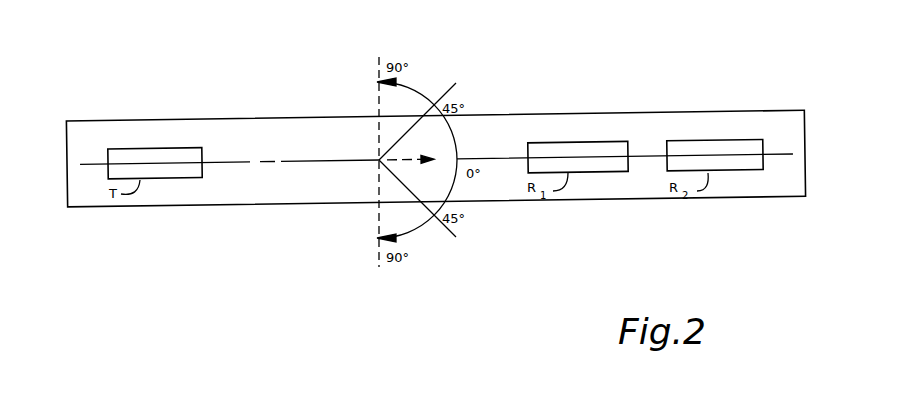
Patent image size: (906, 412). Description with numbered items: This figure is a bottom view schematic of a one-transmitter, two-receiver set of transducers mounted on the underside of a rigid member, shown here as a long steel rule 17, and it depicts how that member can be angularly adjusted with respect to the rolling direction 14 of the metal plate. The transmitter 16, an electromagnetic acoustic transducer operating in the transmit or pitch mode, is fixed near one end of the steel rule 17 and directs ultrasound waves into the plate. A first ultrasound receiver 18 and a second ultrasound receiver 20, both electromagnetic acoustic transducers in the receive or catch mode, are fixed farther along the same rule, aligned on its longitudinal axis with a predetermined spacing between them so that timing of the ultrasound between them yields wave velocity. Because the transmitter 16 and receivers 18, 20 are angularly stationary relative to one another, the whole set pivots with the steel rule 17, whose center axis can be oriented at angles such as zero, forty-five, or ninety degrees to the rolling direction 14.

The rolling direction 14 is at (343, 160).
The transmitter 16 is at (122, 152).
The steel rule 17 is at (288, 207).
The first ultrasound receiver 18 is at (550, 143).
The second ultrasound receiver 20 is at (697, 142).